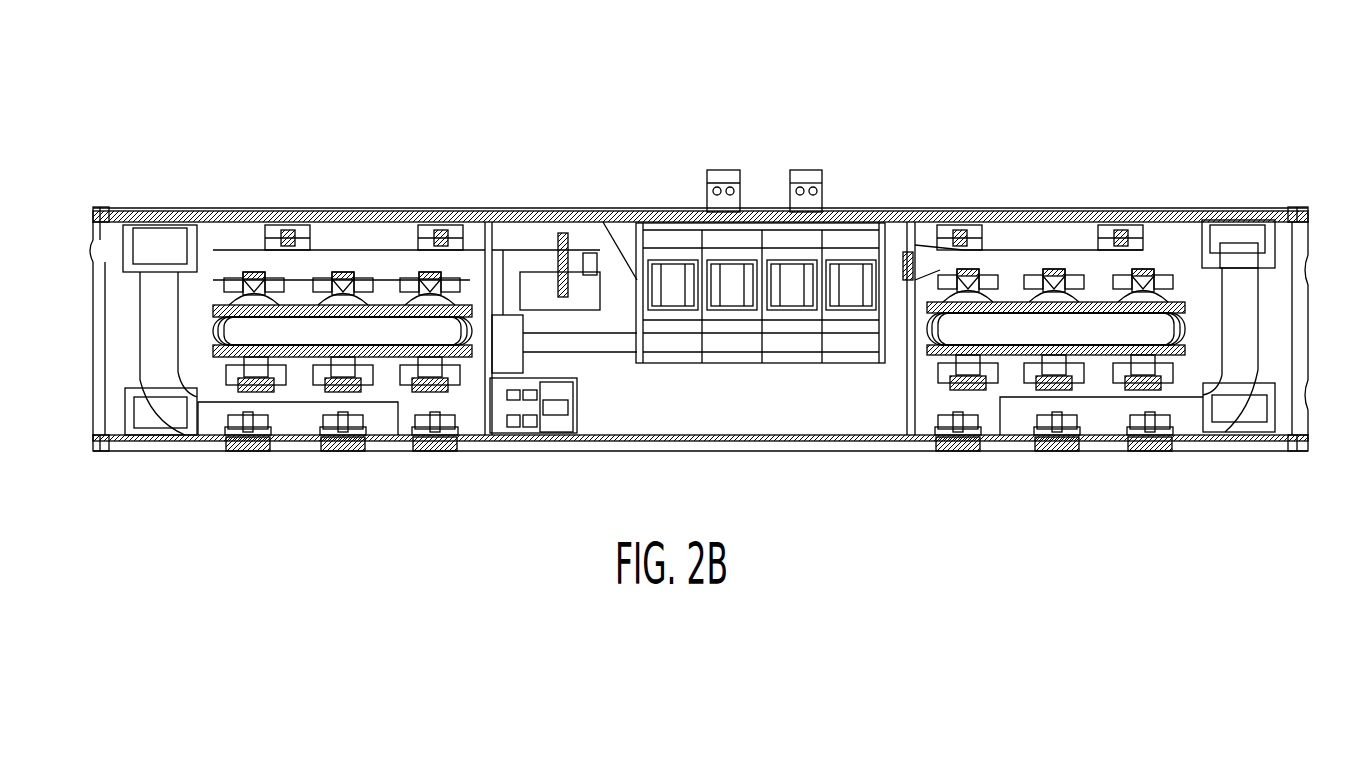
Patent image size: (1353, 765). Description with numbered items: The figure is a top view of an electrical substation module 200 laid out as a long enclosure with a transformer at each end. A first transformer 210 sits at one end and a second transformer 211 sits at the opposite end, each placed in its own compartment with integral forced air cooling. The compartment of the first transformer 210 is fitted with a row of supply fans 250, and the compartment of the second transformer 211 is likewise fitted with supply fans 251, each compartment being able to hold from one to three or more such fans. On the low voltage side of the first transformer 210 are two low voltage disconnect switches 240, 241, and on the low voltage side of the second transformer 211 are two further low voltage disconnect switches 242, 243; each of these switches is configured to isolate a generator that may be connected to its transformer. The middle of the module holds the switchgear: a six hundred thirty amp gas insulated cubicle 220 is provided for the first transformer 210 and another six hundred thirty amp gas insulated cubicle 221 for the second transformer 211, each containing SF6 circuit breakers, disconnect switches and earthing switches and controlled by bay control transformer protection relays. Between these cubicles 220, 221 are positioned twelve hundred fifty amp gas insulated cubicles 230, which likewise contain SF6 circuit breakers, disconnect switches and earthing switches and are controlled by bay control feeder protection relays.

The electrical substation module 200 is at (170, 128).
The first transformer 210 is at (385, 328).
The second transformer 211 is at (1013, 320).
The 630 amp gas insulated cubicle 220 is at (663, 246).
The 630 amp gas insulated cubicle 221 is at (857, 240).
The 1250 amp gas insulated cubicle 230 is at (787, 238).
The low voltage disconnect switch 240 is at (143, 439).
The low voltage disconnect switch 241 is at (116, 243).
The low voltage disconnect switch 242 is at (1258, 430).
The low voltage disconnect switch 243 is at (1287, 245).
The supply fan 250 is at (248, 456).
The supply fan 251 is at (965, 456).